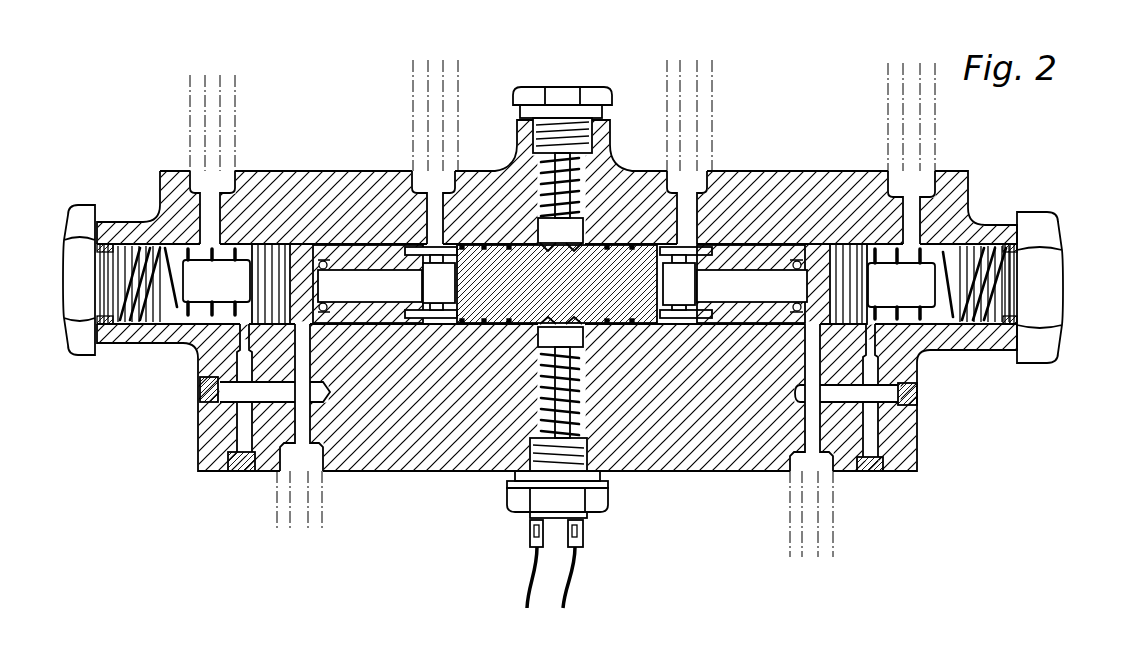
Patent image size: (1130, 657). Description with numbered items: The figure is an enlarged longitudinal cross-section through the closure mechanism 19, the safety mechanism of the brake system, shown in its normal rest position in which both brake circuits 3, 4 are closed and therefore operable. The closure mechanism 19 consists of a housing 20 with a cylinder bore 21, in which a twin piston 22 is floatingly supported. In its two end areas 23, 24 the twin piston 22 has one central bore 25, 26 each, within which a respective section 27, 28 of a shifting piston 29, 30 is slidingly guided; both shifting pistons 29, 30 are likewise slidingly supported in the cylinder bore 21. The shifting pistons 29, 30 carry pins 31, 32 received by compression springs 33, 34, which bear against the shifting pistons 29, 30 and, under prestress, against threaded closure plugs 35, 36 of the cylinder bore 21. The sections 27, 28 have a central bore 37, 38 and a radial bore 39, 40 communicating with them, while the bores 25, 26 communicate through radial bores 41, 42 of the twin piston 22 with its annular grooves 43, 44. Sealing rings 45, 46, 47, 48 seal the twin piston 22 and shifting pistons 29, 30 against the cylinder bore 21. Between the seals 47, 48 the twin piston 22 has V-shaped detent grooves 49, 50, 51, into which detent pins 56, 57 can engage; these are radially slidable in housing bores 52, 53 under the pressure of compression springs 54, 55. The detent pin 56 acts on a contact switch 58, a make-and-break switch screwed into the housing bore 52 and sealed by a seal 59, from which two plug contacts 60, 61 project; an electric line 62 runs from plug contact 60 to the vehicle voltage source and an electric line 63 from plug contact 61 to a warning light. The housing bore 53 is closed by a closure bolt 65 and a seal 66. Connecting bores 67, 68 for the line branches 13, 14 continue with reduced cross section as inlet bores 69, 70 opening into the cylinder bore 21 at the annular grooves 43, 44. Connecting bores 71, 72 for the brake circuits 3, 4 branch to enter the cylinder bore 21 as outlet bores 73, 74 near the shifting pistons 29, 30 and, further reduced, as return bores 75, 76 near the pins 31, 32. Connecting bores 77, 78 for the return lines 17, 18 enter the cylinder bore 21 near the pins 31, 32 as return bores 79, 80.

The brake circuit 3 is at (298, 500).
The brake circuit 4 is at (803, 540).
The line branch 13 is at (432, 70).
The line branch 14 is at (683, 75).
The return line 17 is at (208, 75).
The return line 18 is at (906, 85).
The closure mechanism 19 is at (148, 212).
The housing 20 is at (330, 212).
The cylinder bore 21 is at (172, 236).
The twin piston 22 is at (480, 290).
The end area of twin piston 23 is at (360, 250).
The end area of twin piston 24 is at (752, 248).
The central bore 25 is at (434, 294).
The central bore 26 is at (672, 295).
The section of shifting piston 27 is at (370, 286).
The section of shifting piston 28 is at (775, 288).
The shifting piston 29 is at (272, 270).
The shifting piston 30 is at (815, 262).
The pin 31 is at (206, 294).
The pin 32 is at (891, 295).
The compression spring 33 is at (175, 310).
The compression spring 34 is at (951, 320).
The threaded closure plug 35 is at (85, 293).
The threaded closure plug 36 is at (1045, 285).
The central bore 37 is at (395, 288).
The central bore 38 is at (752, 286).
The radial bore 39 is at (326, 311).
The radial bore 40 is at (792, 312).
The radial bore 41 is at (432, 313).
The radial bore 42 is at (678, 320).
The annular groove 43 is at (446, 320).
The annular groove 44 is at (658, 325).
The sealing ring 45 is at (276, 320).
The sealing ring 46 is at (857, 328).
The sealing ring 47 is at (510, 245).
The sealing ring 48 is at (643, 245).
The detent groove 49 is at (546, 252).
The detent groove 50 is at (561, 252).
The detent groove 51 is at (578, 252).
The housing bore 52 is at (585, 409).
The housing bore 53 is at (590, 182).
The compression spring 54 is at (538, 384).
The compression spring 55 is at (537, 175).
The detent pin 56 is at (552, 338).
The detent pin 57 is at (568, 231).
The contact switch 58 is at (608, 504).
The seal 59 is at (515, 476).
The plug contact 60 is at (536, 536).
The plug contact 61 is at (580, 536).
The electric line 62 is at (526, 606).
The electric line 63 is at (566, 606).
The closure bolt 65 is at (555, 86).
The seal 66 is at (603, 114).
The connecting bore 67 is at (437, 175).
The connecting bore 68 is at (697, 173).
The inlet bore 69 is at (433, 240).
The inlet bore 70 is at (690, 240).
The connecting bore 71 is at (278, 471).
The connecting bore 72 is at (833, 465).
The outlet bore 73 is at (303, 330).
The outlet bore 74 is at (797, 392).
The return bore 75 is at (247, 328).
The return bore 76 is at (873, 333).
The connecting bore 77 is at (196, 178).
The connecting bore 78 is at (933, 185).
The return bore 79 is at (210, 232).
The return bore 80 is at (910, 236).